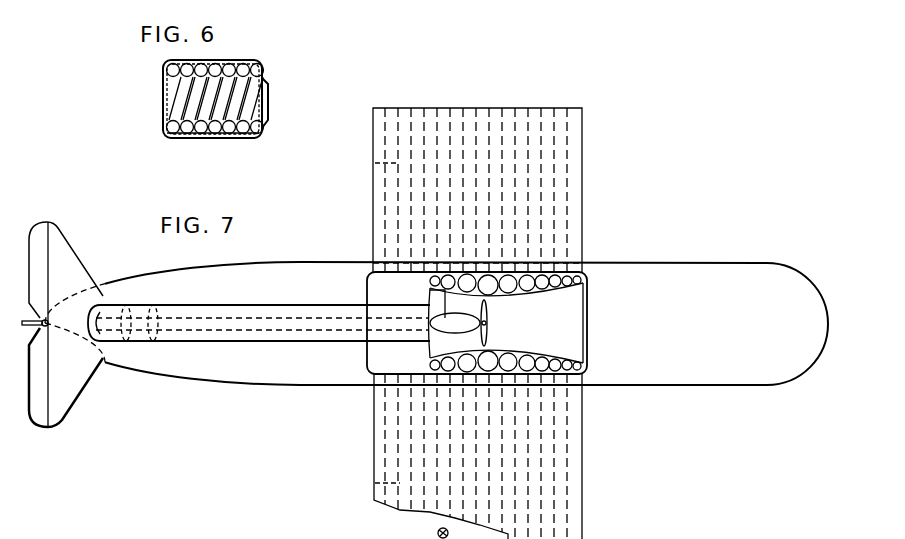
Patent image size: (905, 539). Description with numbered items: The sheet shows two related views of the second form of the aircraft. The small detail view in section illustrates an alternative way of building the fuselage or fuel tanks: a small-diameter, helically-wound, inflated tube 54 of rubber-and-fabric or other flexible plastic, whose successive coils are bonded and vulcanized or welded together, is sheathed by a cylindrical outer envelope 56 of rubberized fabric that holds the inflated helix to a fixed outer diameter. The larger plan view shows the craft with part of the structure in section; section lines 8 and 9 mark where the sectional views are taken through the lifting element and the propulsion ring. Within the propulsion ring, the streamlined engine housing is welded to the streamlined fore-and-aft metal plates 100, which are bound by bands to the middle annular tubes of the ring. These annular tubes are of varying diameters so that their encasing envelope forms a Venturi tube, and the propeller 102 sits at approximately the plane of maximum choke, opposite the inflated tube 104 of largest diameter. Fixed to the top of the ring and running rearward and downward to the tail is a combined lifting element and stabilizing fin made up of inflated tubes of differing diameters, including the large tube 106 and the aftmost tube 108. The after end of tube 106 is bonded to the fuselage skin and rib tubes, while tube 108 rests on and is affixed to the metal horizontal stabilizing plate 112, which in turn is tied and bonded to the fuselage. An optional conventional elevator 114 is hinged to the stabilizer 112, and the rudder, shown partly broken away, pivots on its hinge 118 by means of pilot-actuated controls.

In FIG. 6, the helically-wound inflated tube 54 is at (266, 66).
In FIG. 6, the cylindrical outer envelope 56 is at (178, 133).
In FIG. 7, the section line 8 is at (485, 93).
In FIG. 7, the section line 9 is at (375, 295).
In FIG. 7, the fore-and-aft metal plates 100 is at (471, 347).
In FIG. 7, the propeller 102 is at (490, 309).
In FIG. 7, the inflated tube 104 is at (494, 350).
In FIG. 7, the inflated tube 106 is at (160, 304).
In FIG. 7, the inflated tube 108 is at (438, 533).
In FIG. 7, the horizontal stabilizing plate 112 is at (86, 378).
In FIG. 7, the elevator 114 is at (40, 430).
In FIG. 7, the hinge 118 is at (50, 320).